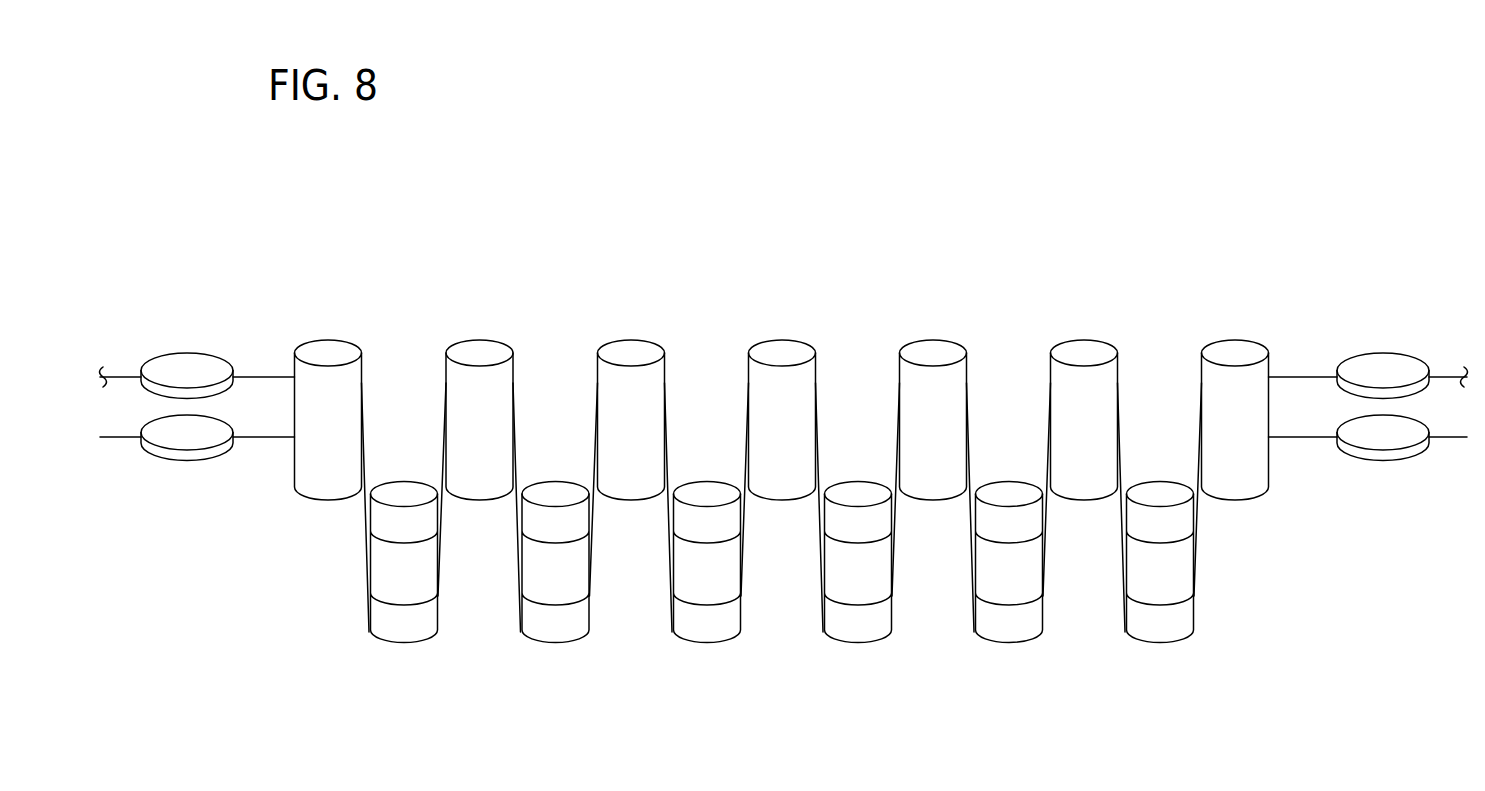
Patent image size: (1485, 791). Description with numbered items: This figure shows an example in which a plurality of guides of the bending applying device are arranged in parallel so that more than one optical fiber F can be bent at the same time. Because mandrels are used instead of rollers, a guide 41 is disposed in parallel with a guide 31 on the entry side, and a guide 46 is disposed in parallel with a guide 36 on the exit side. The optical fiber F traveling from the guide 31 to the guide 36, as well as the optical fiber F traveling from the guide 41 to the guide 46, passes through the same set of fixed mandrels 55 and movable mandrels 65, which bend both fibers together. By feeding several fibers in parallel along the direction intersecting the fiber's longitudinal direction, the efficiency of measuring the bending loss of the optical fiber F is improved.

The optical fiber F is at (128, 376).
The guide 31 is at (187, 363).
The guide 41 is at (185, 445).
The guide 36 is at (1387, 363).
The guide 46 is at (1385, 443).
The fixed mandrels 55 is at (625, 353).
The movable mandrels 65 is at (710, 629).